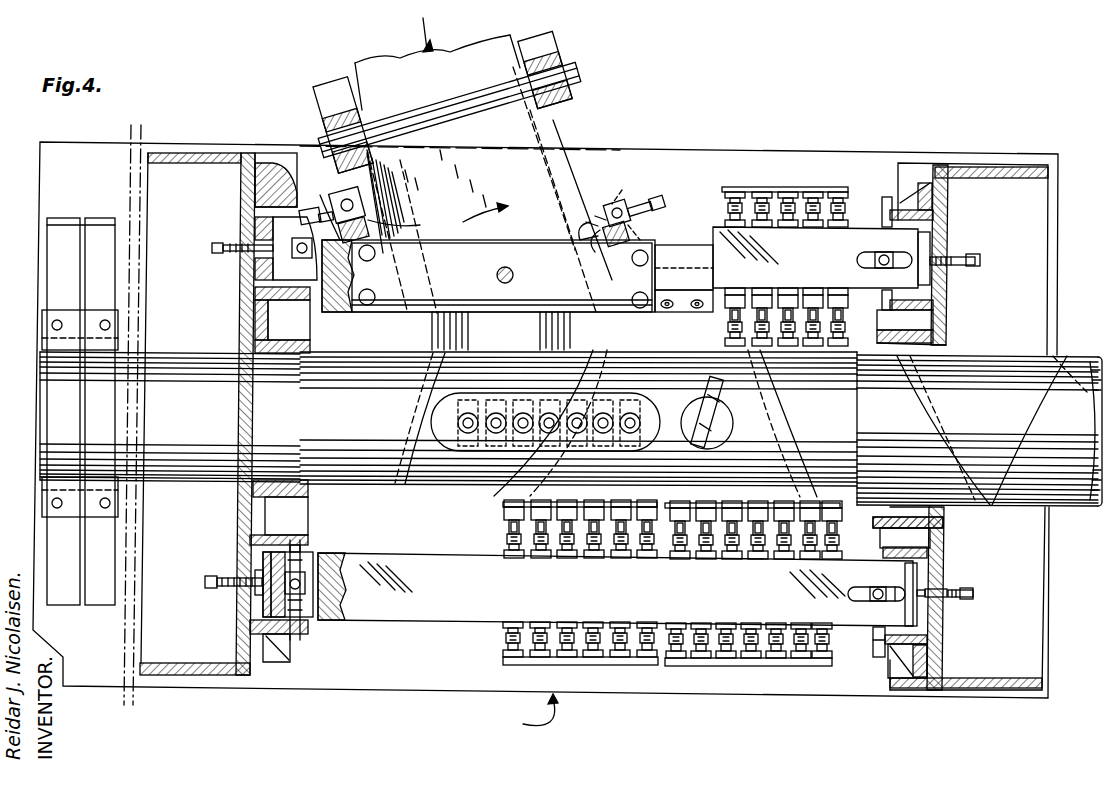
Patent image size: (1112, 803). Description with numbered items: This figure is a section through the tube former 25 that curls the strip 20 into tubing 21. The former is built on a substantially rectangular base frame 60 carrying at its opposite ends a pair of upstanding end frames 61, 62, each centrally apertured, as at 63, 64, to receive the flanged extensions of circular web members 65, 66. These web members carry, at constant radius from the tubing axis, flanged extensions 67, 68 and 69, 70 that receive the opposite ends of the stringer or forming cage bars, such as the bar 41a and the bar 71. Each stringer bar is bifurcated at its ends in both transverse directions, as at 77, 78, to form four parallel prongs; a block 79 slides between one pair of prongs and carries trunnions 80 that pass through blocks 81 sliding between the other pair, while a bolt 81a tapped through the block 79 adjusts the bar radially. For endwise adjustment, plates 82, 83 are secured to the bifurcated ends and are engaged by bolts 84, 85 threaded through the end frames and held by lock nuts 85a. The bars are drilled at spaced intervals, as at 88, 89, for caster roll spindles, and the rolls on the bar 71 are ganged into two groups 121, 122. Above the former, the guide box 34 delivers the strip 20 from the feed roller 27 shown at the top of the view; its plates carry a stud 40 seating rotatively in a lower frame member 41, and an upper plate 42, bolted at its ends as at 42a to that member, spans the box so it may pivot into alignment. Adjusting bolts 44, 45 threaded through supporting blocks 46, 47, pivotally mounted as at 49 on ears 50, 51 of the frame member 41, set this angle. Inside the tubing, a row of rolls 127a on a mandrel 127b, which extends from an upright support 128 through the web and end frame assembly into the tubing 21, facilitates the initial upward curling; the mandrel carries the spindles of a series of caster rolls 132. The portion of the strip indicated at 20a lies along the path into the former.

The strip 20 is at (372, 58).
The belt portion 20a is at (501, 331).
The tubing 21 is at (1078, 354).
The tube former 25 is at (534, 710).
The roller shaft 27 is at (436, 100).
The guide box 34 is at (540, 142).
The stud 40 is at (512, 272).
The lower frame member 41 is at (670, 255).
The stringer bar 41a is at (715, 232).
The upper plate 42 is at (535, 226).
The bolts 42a is at (376, 254).
The adjusting bolt 44 is at (322, 210).
The adjusting bolt 45 is at (648, 200).
The supporting block 46 is at (362, 196).
The supporting block 47 is at (606, 203).
The pivotal mounting 49 is at (624, 192).
The ear 50 is at (580, 224).
The ear 51 is at (372, 218).
The base frame 60 is at (370, 687).
The end frame 61 is at (240, 638).
The end frame 62 is at (945, 660).
The central aperture 63 is at (245, 490).
The central aperture 64 is at (945, 312).
The web member 65 is at (282, 320).
The web member 66 is at (948, 334).
The flanged extension 67 is at (304, 545).
The flanged extension 68 is at (290, 650).
The flanged extension 69 is at (945, 541).
The flanged extension 70 is at (943, 640).
The stringer bar 71 is at (390, 554).
The bifurcated end 77 is at (848, 592).
The bifurcated end 78 is at (308, 622).
The block 79 is at (312, 560).
The trunnion 80 is at (876, 600).
The block 81 is at (895, 588).
The bolt 81a is at (310, 540).
The plate 82 is at (262, 600).
The plate 83 is at (273, 262).
The bolt 84 is at (204, 582).
The bolt 85 is at (975, 593).
The lock nut 85a is at (256, 572).
The hole 88 is at (665, 308).
The hole 89 is at (696, 308).
The group of caster rolls 121 is at (566, 660).
The group of caster rolls 122 is at (735, 667).
The row of rolls 127a is at (440, 412).
The mandrel 127b is at (180, 355).
The upright support 128 is at (48, 322).
The caster rolls 132 is at (720, 402).